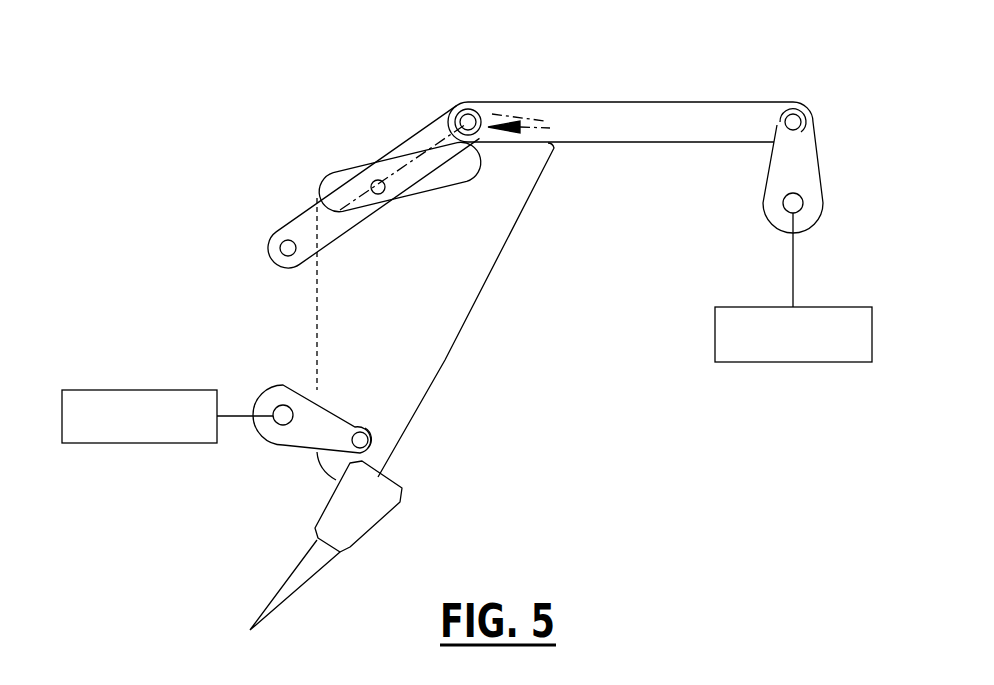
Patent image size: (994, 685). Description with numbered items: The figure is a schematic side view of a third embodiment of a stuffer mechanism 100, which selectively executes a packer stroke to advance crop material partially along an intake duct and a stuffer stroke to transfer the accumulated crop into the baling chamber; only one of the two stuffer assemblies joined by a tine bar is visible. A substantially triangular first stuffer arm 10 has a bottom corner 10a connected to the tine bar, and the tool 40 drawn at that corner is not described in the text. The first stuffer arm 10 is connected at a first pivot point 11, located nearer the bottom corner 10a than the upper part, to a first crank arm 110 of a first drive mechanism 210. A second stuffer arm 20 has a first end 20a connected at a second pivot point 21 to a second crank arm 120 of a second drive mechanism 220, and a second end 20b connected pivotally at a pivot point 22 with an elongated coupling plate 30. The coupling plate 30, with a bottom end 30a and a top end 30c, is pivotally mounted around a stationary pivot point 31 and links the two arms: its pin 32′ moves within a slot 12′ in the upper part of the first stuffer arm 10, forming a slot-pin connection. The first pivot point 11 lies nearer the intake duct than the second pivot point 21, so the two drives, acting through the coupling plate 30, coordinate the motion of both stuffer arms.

The first stuffer arm 10 is at (458, 295).
The bottom corner 10a is at (446, 475).
The first pivot point 11 is at (367, 432).
The slot 12′ is at (420, 170).
The second stuffer arm 20 is at (657, 127).
The first end 20a is at (823, 83).
The second end 20b is at (550, 128).
The second pivot point 21 is at (788, 114).
The pivot point 22 is at (463, 112).
The coupling plate 30 is at (281, 184).
The bottom end 30a is at (227, 278).
The top end 30c is at (423, 78).
The stationary pivot point 31 is at (280, 240).
The pin 32′ is at (378, 194).
The tool 40 is at (303, 578).
The stuffer mechanism 100 is at (641, 483).
The first crank arm 110 is at (298, 435).
The second crank arm 120 is at (800, 168).
The first drive mechanism 210 is at (108, 445).
The second drive mechanism 220 is at (766, 352).